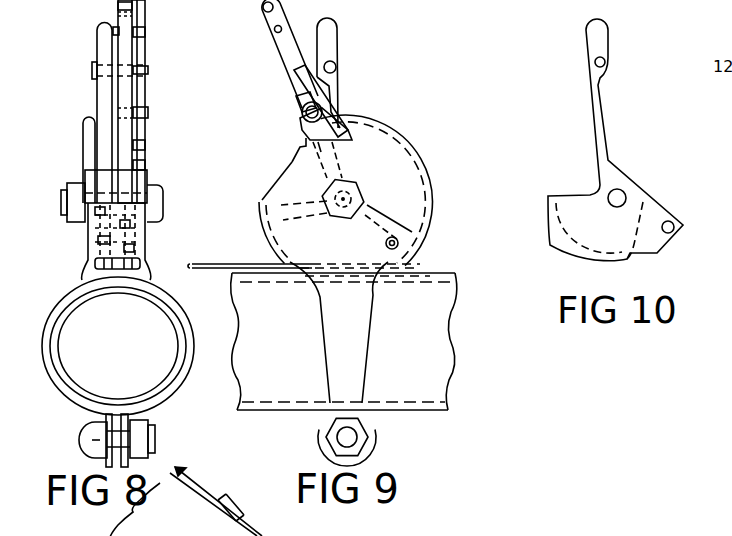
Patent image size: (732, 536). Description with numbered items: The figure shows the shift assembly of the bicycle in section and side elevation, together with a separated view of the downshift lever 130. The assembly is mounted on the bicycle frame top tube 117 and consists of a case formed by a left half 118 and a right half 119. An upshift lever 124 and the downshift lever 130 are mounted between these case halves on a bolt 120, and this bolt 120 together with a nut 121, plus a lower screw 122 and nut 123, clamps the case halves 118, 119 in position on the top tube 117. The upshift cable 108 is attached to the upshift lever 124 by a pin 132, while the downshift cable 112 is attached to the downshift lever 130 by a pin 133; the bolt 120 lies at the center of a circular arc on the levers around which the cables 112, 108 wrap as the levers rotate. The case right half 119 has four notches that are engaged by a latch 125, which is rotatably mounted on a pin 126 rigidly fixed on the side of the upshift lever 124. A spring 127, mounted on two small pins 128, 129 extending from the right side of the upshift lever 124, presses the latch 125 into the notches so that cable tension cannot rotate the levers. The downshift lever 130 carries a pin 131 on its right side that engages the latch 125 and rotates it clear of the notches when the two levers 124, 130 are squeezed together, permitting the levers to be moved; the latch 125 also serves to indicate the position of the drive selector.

In FIG. 8, the cable 108 is at (147, 264).
In FIG. 9, the cable 108 is at (256, 262).
In FIG. 8, the cable 112 is at (95, 262).
In FIG. 9, the cable 112 is at (202, 262).
In FIG. 9, the bicycle frame top tube 117 is at (433, 411).
In FIG. 8, the left half of shift assembly case 118 is at (83, 158).
In FIG. 8, the right half of shift assembly case 119 is at (148, 172).
In FIG. 9, the right half of shift assembly case 119 is at (385, 160).
In FIG. 8, the bolt 120 is at (147, 198).
In FIG. 9, the bolt 120 is at (363, 187).
In FIG. 10, the bolt 120 is at (622, 192).
In FIG. 8, the nut 121 is at (82, 222).
In FIG. 8, the lower screw 122 is at (88, 428).
In FIG. 8, the nut 123 is at (150, 426).
In FIG. 9, the nut 123 is at (368, 432).
In FIG. 9, the upshift lever 124 is at (305, 86).
In FIG. 9, the latch 125 is at (300, 103).
In FIG. 9, the pin 126 is at (306, 115).
In FIG. 9, the spring 127 is at (288, 51).
In FIG. 9, the small pin 128 is at (262, 9).
In FIG. 9, the small pin 129 is at (274, 31).
In FIG. 8, the downshift lever 130 is at (97, 44).
In FIG. 9, the downshift lever 130 is at (338, 35).
In FIG. 10, the downshift lever 130 is at (610, 36).
In FIG. 8, the pin 131 is at (92, 72).
In FIG. 9, the pin 131 is at (337, 66).
In FIG. 10, the pin 131 is at (606, 61).
In FIG. 9, the pin 132 is at (422, 247).
In FIG. 9, the pin 133 is at (412, 232).
In FIG. 10, the pin 133 is at (673, 224).